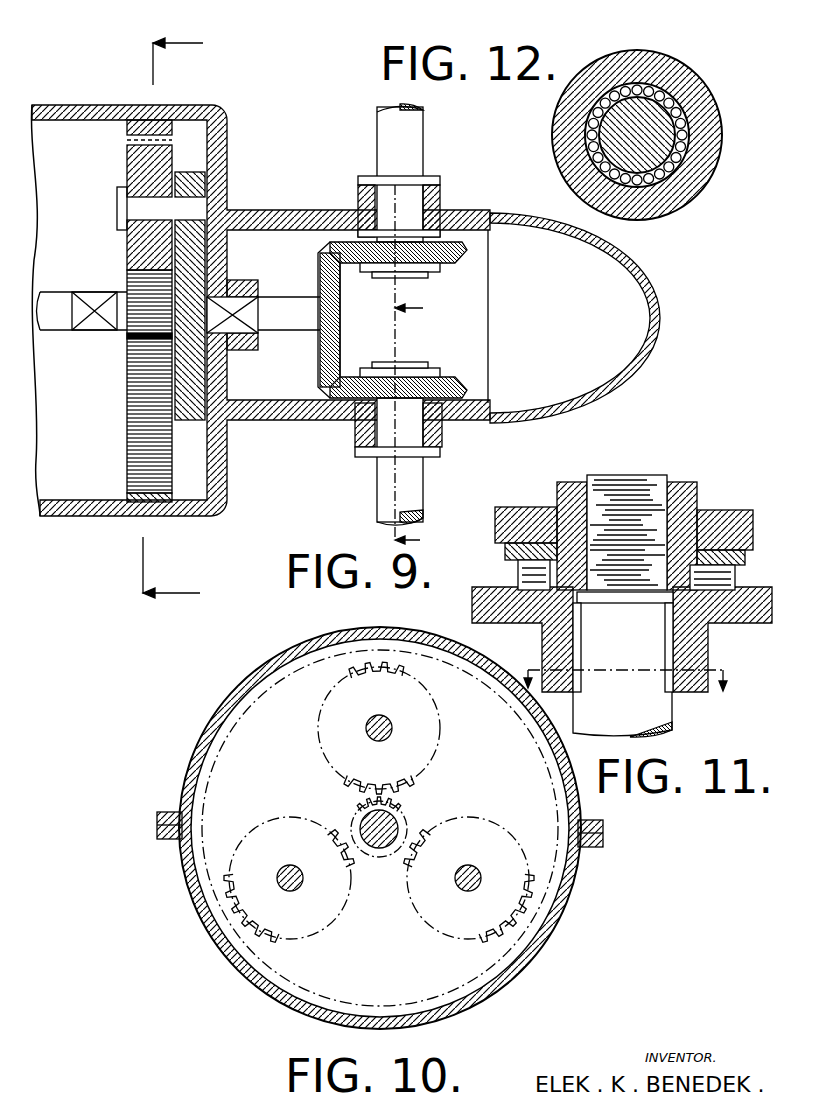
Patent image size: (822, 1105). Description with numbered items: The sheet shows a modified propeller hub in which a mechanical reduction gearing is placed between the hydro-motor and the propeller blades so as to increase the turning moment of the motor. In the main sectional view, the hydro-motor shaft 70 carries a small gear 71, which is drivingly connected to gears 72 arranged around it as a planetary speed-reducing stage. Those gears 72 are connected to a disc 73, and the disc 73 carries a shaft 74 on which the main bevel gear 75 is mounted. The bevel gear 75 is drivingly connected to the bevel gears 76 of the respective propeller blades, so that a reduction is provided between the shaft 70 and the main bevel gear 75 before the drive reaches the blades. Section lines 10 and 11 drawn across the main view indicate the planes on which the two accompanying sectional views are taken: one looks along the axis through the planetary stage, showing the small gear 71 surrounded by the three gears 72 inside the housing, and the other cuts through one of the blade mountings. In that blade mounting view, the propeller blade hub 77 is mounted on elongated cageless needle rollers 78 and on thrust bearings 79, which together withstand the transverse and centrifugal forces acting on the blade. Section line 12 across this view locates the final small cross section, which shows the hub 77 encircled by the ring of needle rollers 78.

In FIG. 9, the hydro-motor shaft 70 is at (93, 324).
In FIG. 10, the small gear 71 is at (407, 817).
In FIG. 9, the gears 72 is at (127, 250).
In FIG. 10, the gears 72 is at (441, 725).
In FIG. 9, the disc 73 is at (190, 197).
In FIG. 9, the shaft 74 is at (297, 322).
In FIG. 9, the bevel gear 75 is at (342, 311).
In FIG. 9, the bevel gears 76 is at (455, 370).
In FIG. 9, the propeller blade hub 77 is at (424, 158).
In FIG. 12, the propeller blade hub 77 is at (660, 138).
In FIG. 11, the propeller blade hub 77 is at (660, 715).
In FIG. 9, the elongated cageless needle rollers 78 is at (425, 207).
In FIG. 12, the elongated cageless needle rollers 78 is at (688, 105).
In FIG. 11, the elongated cageless needle rollers 78 is at (668, 648).
In FIG. 11, the thrust bearings 79 is at (518, 572).
In FIG. 9, the section line 10— 10 is at (174, 307).
In FIG. 9, the section line 11— 11 is at (416, 364).
In FIG. 11, the section line 12— 12 is at (626, 667).